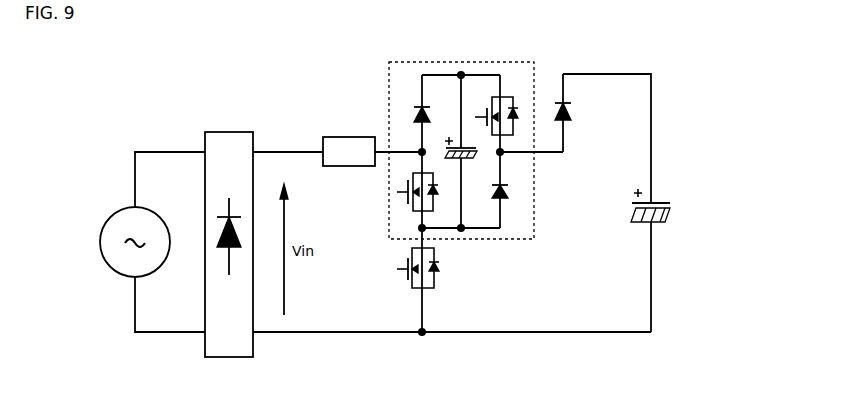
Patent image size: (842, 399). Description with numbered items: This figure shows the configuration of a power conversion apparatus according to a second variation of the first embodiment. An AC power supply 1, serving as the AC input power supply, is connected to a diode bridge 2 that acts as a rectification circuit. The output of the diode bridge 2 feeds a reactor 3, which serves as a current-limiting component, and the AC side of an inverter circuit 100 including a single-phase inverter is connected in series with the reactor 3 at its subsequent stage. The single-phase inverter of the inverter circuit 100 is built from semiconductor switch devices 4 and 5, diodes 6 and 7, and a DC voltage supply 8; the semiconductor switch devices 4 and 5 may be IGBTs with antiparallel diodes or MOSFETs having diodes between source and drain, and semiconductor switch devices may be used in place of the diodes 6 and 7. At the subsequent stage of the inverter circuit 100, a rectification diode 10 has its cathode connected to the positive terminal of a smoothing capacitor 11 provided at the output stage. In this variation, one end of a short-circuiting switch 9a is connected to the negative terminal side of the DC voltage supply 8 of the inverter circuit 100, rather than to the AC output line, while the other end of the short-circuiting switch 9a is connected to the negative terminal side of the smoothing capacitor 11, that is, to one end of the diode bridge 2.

The AC power supply 1 is at (97, 252).
The diode bridge 2 is at (205, 132).
The reactor 3 is at (322, 137).
The semiconductor switch device 4 is at (413, 212).
The semiconductor switch device 5 is at (512, 93).
The diode 6 is at (410, 115).
The diode 7 is at (513, 192).
The DC voltage supply 8 is at (467, 165).
The short-circuiting switch 9a is at (405, 281).
The rectification diode 10 is at (573, 117).
The smoothing capacitor 11 is at (657, 199).
The inverter circuit 100 is at (389, 62).